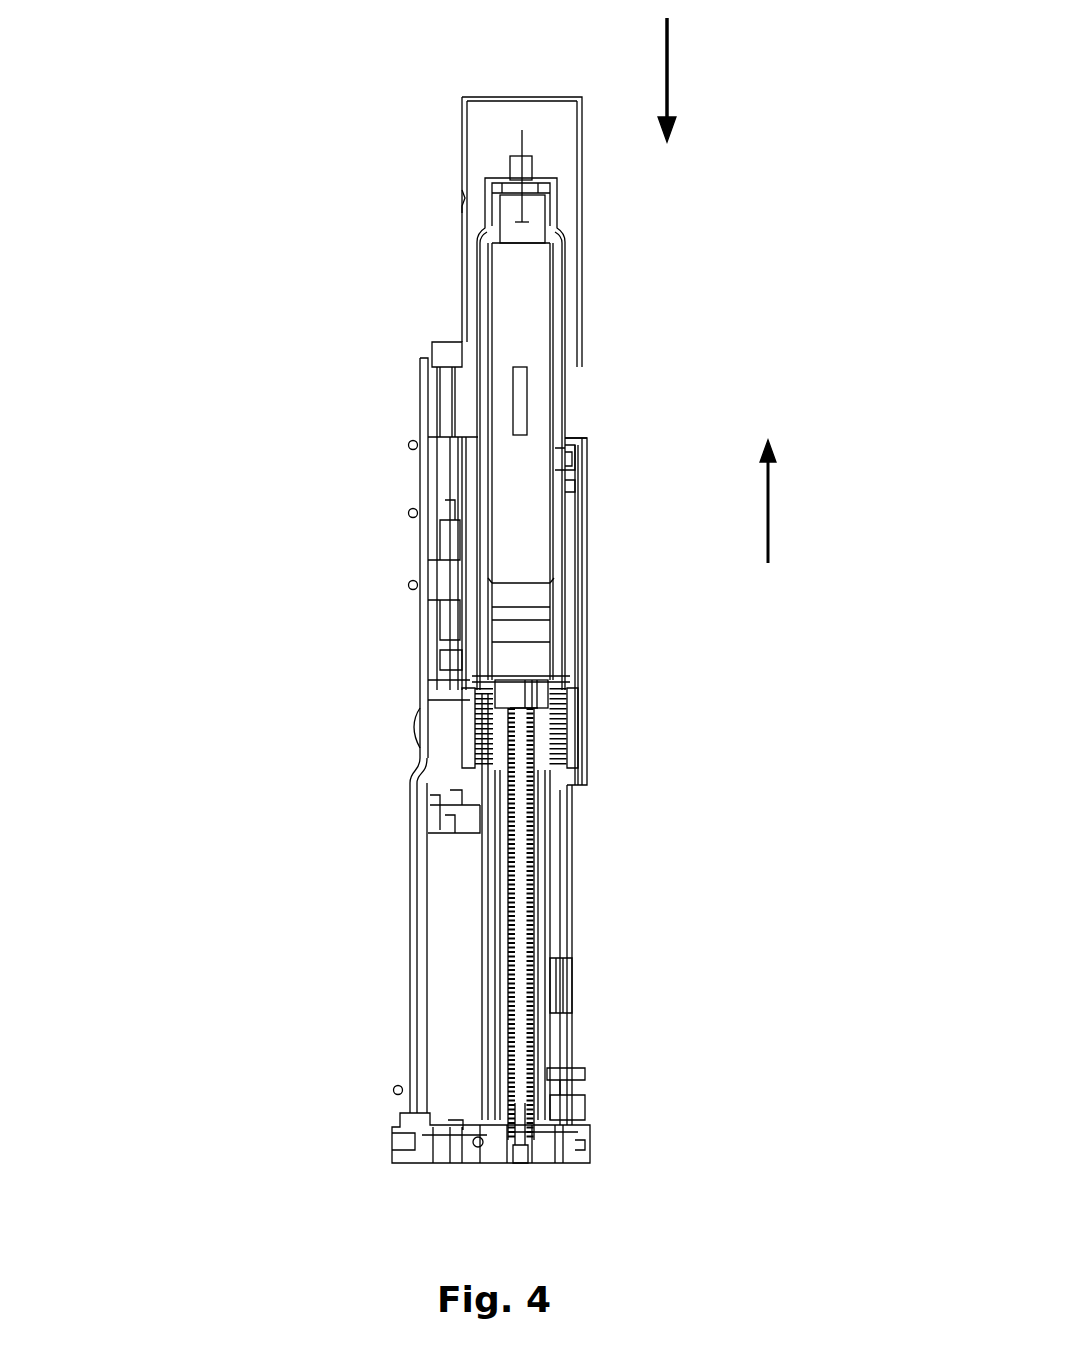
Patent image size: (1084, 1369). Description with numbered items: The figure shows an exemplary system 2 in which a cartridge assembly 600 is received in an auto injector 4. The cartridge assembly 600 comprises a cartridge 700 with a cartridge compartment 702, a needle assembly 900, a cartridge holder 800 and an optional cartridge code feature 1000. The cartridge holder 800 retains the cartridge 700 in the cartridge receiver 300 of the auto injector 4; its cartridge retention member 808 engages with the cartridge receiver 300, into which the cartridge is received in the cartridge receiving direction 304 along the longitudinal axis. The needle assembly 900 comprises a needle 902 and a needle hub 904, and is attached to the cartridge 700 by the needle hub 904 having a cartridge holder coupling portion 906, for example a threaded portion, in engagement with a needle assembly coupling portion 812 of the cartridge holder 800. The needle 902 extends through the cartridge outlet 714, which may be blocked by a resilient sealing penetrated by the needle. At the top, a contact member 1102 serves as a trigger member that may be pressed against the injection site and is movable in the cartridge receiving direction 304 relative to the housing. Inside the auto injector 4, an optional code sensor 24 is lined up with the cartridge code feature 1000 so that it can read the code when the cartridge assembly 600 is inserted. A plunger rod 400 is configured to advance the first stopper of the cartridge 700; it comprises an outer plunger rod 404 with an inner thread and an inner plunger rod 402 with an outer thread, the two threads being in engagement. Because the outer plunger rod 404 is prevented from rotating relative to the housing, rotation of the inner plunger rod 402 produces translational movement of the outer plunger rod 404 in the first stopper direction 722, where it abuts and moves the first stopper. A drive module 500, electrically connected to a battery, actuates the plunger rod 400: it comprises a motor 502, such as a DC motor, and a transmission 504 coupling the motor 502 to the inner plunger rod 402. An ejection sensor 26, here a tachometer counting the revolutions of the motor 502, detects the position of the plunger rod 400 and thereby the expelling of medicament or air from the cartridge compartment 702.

The system 2 is at (210, 68).
The auto injector 4 is at (338, 330).
The code sensor 24 is at (442, 632).
The ejection sensor 26 is at (438, 803).
The cartridge receiver 300 is at (567, 460).
The cartridge receiving direction 304 is at (669, 80).
The plunger rod 400 is at (537, 798).
The inner plunger rod 402 is at (520, 938).
The outer plunger rod 404 is at (537, 712).
The drive module 500 is at (412, 966).
The motor 502 is at (440, 903).
The transmission 504 is at (453, 1130).
The cartridge assembly 600 is at (590, 393).
The cartridge 700 is at (501, 459).
The cartridge compartment 702 is at (512, 312).
The cartridge outlet 714 is at (503, 202).
The first stopper direction 722 is at (772, 511).
The cartridge holder 800 is at (558, 325).
The cartridge retention member 808 is at (578, 492).
The needle assembly coupling portion 812 is at (553, 223).
The needle assembly 900 is at (520, 152).
The needle 902 is at (518, 128).
The needle hub 904 is at (485, 178).
The cartridge holder coupling portion 906 is at (552, 200).
The cartridge code feature 1000 is at (535, 632).
The contact member 1102 is at (582, 118).